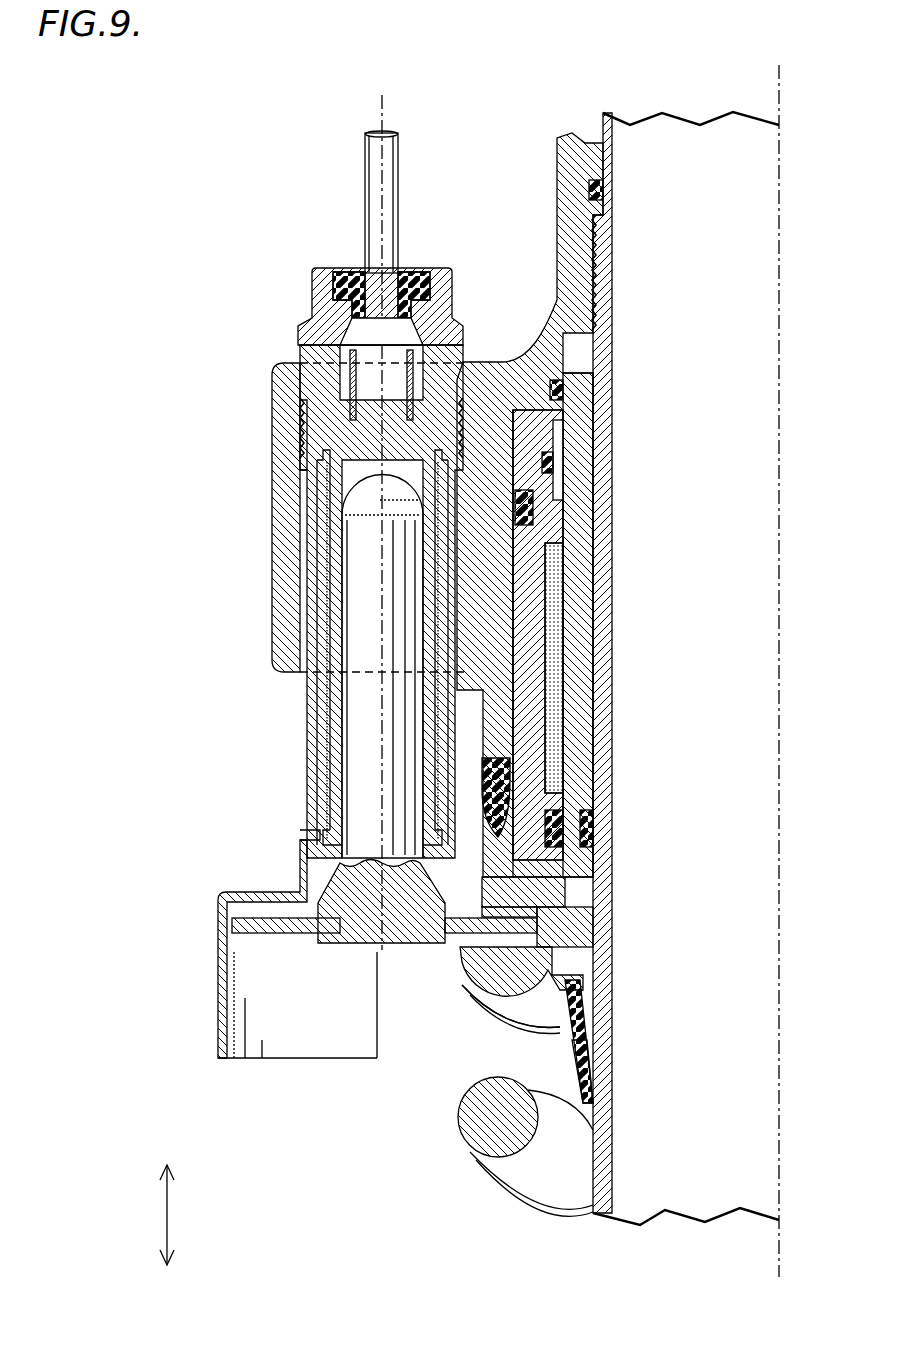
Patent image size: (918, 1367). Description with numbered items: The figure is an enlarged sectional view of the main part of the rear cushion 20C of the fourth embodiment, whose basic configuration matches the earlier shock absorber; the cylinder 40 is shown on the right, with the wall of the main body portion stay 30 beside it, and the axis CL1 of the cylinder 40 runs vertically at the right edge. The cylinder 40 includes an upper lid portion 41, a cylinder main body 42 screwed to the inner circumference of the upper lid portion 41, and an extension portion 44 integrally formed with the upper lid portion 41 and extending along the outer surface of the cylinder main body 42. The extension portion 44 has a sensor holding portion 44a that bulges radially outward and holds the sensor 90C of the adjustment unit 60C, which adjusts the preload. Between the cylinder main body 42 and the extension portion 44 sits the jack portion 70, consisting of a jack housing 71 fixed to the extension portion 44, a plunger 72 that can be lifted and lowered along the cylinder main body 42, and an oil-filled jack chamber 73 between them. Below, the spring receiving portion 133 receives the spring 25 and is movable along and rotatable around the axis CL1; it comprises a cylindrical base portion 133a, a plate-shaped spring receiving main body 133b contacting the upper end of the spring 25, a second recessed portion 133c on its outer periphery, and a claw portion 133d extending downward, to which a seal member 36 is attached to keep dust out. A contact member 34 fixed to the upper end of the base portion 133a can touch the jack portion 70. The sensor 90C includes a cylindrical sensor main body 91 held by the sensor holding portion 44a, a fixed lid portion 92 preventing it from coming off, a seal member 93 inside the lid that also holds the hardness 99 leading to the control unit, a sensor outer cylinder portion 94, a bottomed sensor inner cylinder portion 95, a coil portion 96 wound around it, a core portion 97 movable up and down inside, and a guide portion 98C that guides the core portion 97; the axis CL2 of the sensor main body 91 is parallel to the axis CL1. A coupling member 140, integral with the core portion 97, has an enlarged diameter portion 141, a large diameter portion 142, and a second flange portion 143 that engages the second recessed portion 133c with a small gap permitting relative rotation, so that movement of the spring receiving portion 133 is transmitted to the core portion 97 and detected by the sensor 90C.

The rear cushion 20C is at (198, 182).
The fork body 30 is at (617, 646).
The cylinder 40 is at (603, 505).
The upper lid portion 41 is at (552, 262).
The cylinder main body 42 is at (575, 505).
The extension portion 44 is at (575, 505).
The sensor holding portion 44a is at (272, 468).
The adjustment unit 60C is at (354, 277).
The jack portion 70 is at (631, 625).
The jack housing 71 is at (548, 676).
The plunger 72 is at (597, 636).
The jack chamber 73 is at (552, 578).
The sensor 90C is at (354, 272).
The sensor main body 91 is at (341, 601).
The fixed lid portion 92 is at (354, 277).
The seal member 93 is at (404, 274).
The sensor outer cylinder portion 94 is at (302, 428).
The sensor inner cylinder portion 95 is at (332, 720).
The coil portion 96 is at (330, 580).
The core portion 97 is at (360, 778).
The guide portion 98C is at (218, 988).
The hardness 99 is at (366, 172).
The spring receiving portion 133 is at (616, 989).
The base portion 133a is at (576, 1002).
The spring receiving main body 133b is at (556, 962).
The second recessed portion 133c is at (522, 918).
The claw portion 133d is at (642, 1071).
The coupling member 140 is at (341, 932).
The enlarged diameter portion 141 is at (332, 883).
The large diameter portion 142 is at (310, 910).
The second flange portion 143 is at (232, 944).
The contact member 34 is at (498, 877).
The seal member 36 is at (572, 1082).
The spring 25 is at (528, 1182).
The axis CL1 is at (782, 92).
The axis CL2 is at (378, 106).